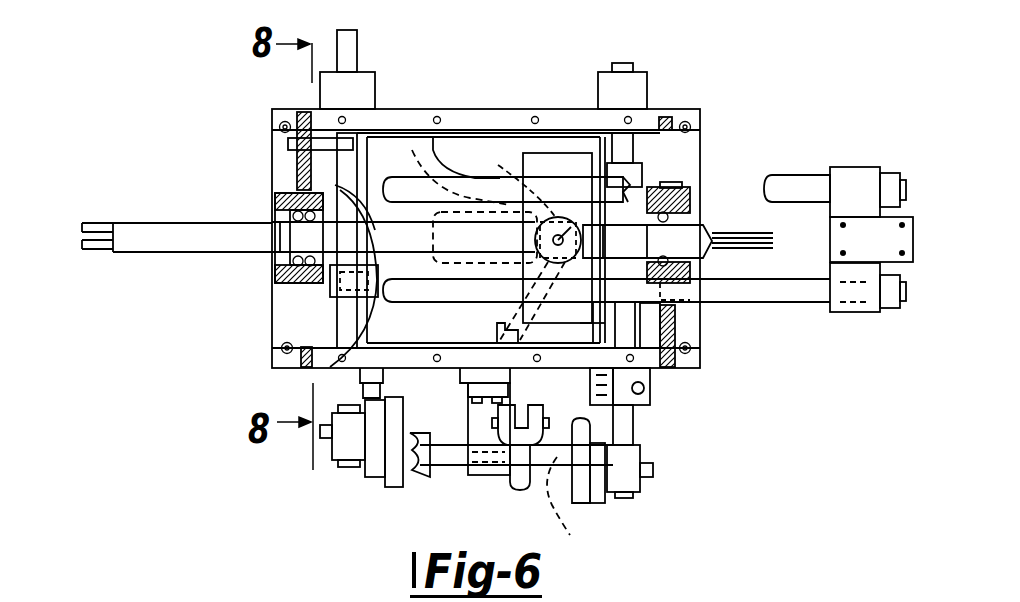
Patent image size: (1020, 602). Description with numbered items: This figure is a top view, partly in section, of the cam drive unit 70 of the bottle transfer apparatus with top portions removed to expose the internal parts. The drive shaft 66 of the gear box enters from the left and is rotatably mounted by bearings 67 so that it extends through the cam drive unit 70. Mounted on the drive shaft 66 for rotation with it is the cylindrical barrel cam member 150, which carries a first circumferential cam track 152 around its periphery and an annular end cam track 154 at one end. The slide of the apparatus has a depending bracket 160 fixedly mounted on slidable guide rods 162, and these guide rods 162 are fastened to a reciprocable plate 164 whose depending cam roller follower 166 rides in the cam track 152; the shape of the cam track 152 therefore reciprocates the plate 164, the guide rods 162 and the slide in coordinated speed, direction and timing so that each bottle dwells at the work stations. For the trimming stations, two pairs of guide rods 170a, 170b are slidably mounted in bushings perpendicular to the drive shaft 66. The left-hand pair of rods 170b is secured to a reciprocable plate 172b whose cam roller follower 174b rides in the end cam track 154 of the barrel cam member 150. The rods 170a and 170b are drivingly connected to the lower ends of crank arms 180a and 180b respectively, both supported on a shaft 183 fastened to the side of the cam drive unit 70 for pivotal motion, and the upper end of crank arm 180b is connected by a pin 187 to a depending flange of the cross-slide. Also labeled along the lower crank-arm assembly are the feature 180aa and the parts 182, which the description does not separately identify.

The drive shaft 66 is at (142, 244).
The bearings 67 is at (277, 263).
The cam drive unit 70 is at (278, 103).
The cylindrical barrel cam member 150 is at (487, 140).
The first circumferential cam track 152 is at (420, 140).
The third annular end cam track 154 is at (372, 217).
The depending bracket 160 is at (862, 178).
The guide rods 162 is at (565, 187).
The reciprocable plate 164 is at (543, 167).
The cam roller follower 166 is at (703, 178).
The pair of guide rods 170a is at (623, 332).
The pair of guide rods 170b is at (352, 327).
The reciprocable plate 172b is at (312, 293).
The cam roller follower 174b is at (330, 367).
The crank arm 180a is at (580, 490).
The fork member 180aa is at (533, 413).
The crank arm 180b is at (407, 473).
The motor 182 is at (375, 473).
The shaft 183 is at (573, 511).
The pin 187 is at (497, 427).